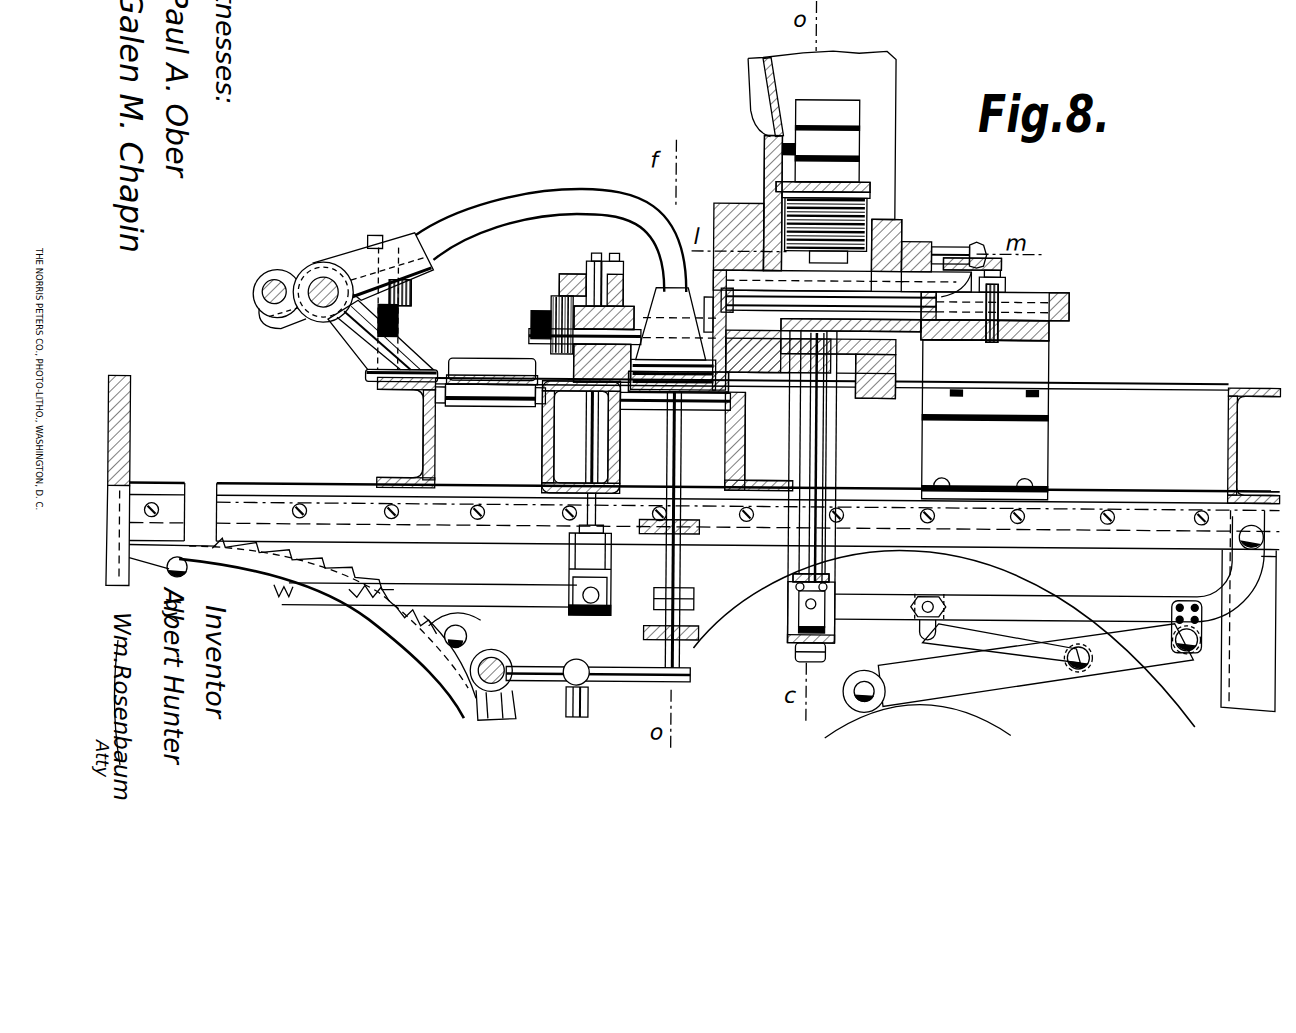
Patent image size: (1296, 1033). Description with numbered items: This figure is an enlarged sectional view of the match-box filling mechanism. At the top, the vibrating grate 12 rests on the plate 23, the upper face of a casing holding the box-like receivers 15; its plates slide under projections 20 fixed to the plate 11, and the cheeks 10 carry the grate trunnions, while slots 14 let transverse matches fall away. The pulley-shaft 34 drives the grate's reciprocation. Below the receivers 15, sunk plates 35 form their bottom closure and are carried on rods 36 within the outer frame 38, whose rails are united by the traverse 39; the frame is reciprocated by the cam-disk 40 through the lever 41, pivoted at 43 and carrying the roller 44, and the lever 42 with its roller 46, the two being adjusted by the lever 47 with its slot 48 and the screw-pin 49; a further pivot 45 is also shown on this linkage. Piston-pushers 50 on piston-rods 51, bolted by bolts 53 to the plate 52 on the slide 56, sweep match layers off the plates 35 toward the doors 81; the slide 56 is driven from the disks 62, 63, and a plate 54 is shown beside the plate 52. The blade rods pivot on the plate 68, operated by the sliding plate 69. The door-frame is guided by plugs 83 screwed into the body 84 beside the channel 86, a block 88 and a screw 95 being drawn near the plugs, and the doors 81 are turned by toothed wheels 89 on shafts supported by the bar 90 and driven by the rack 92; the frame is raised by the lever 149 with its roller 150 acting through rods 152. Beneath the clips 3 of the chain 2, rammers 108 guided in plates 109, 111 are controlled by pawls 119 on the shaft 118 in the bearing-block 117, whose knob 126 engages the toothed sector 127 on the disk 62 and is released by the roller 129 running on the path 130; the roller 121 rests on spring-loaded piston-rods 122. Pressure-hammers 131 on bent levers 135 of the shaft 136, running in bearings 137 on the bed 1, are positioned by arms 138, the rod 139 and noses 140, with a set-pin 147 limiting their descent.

The bed 1 is at (423, 414).
The chain 2 is at (484, 404).
The clips 3 is at (472, 366).
The cheeks 10 is at (842, 140).
The plate 11 is at (762, 70).
The vibrating grate 12 is at (850, 182).
The slots 14 is at (784, 190).
The receivers 15 is at (835, 300).
The projections 20 is at (850, 142).
The plate 23 is at (892, 233).
The pulley-shaft 34 is at (836, 578).
The sunk plates 35 is at (918, 300).
The rods 36 is at (826, 432).
The outer frame 38 is at (836, 456).
The traverse 39 is at (797, 648).
The cam-disk 40 is at (945, 245).
The lever 41 is at (1078, 608).
The lever 42 is at (1118, 660).
The pivot 43 is at (1248, 538).
The roller 44 is at (789, 608).
The pivot pin 45 is at (1187, 638).
The roller 46 is at (850, 698).
The lever 47 is at (952, 642).
The slot 48 is at (921, 626).
The screw-pin 49 is at (928, 594).
The piston-pushers 50 is at (728, 292).
The piston-rods 51 is at (788, 300).
The plate 52 is at (1050, 330).
The bolts 53 is at (1000, 280).
The plate 54 is at (1020, 302).
The slide 56 is at (1040, 456).
The disk 62 is at (172, 559).
The disk 63 is at (1168, 678).
The plate 68 is at (968, 264).
The sliding plate 69 is at (918, 262).
The doors 81 is at (705, 310).
The plugs 83 is at (612, 274).
The body 84 is at (581, 437).
The channel 86 is at (634, 368).
The bearing block 88 is at (592, 356).
The toothed wheels 89 is at (556, 306).
The bar 90 is at (530, 340).
The rack 92 is at (566, 278).
The screw 95 is at (594, 262).
The rammers 108 is at (667, 462).
The plate 109 is at (700, 527).
The plate 111 is at (682, 612).
The bearing-block 117 is at (498, 712).
The shaft 118 is at (500, 662).
The pawls 119 is at (612, 682).
The roller 121 is at (580, 668).
The piston-rods 122 is at (568, 702).
The knob 126 is at (440, 660).
The toothed sector 127 is at (240, 566).
The roller 129 is at (468, 635).
The path 130 is at (182, 561).
The pressure-hammers 131 is at (679, 323).
The bent levers 135 is at (582, 205).
The shaft 136 is at (322, 280).
The bearings 137 is at (368, 366).
The arms 138 is at (272, 283).
The rod 139 is at (258, 296).
The noses 140 is at (275, 322).
The set-pin 147 is at (398, 326).
The lever 149 is at (426, 596).
The roller 150 is at (606, 612).
The rods 152 is at (590, 430).